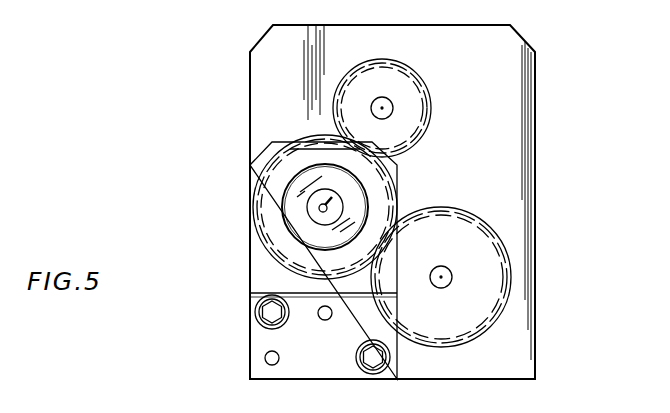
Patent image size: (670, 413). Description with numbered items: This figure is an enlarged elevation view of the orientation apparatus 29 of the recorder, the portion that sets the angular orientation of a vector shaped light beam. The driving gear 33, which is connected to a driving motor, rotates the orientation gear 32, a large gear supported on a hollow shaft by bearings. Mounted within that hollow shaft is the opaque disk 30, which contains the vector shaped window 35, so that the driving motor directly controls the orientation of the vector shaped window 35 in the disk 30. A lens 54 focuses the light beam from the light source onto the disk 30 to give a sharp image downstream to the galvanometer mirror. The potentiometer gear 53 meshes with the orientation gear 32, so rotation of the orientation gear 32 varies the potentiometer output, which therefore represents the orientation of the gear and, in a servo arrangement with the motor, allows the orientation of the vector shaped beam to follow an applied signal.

The orientation apparatus 29 is at (546, 89).
The orientation gear 32 is at (308, 134).
The driving gear 33 is at (430, 98).
The lens 54 is at (283, 190).
The opaque disk 30 is at (318, 216).
The vector shaped window 35 is at (321, 204).
The potentiometer gear 53 is at (504, 246).